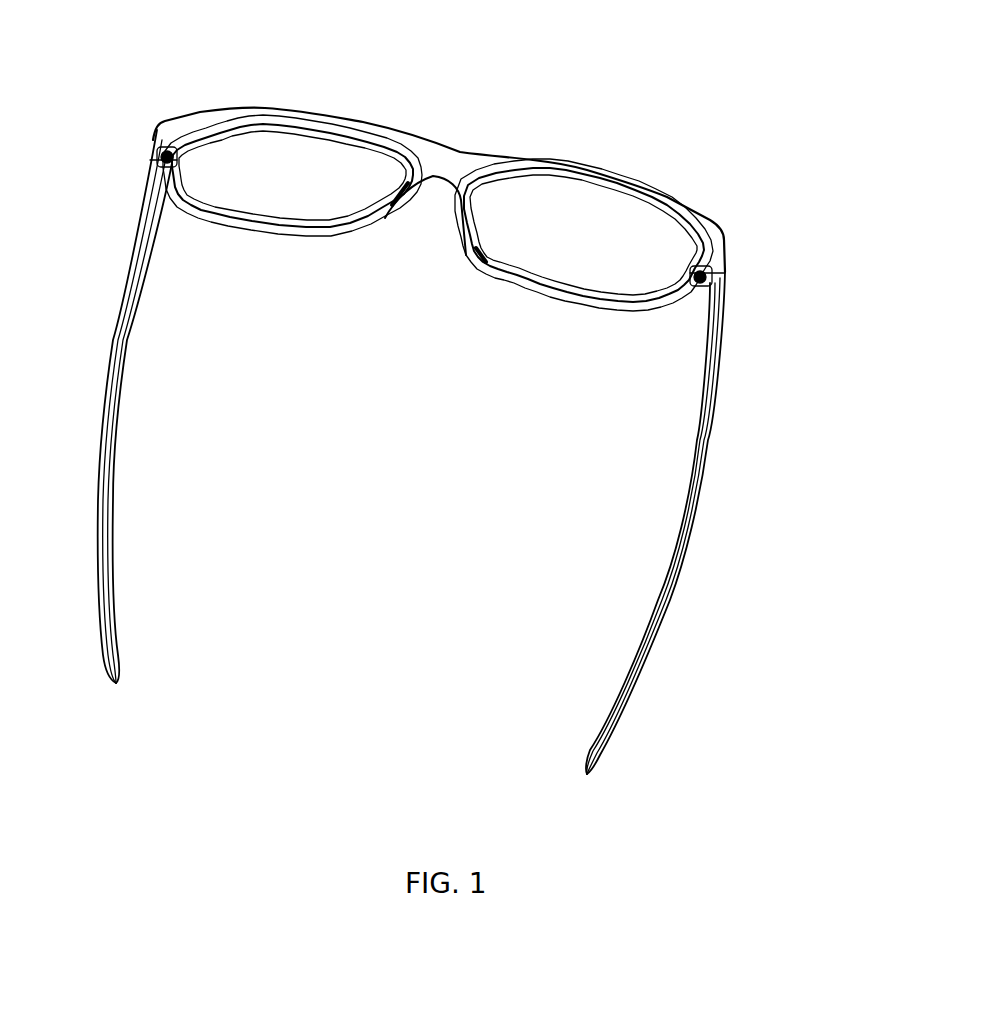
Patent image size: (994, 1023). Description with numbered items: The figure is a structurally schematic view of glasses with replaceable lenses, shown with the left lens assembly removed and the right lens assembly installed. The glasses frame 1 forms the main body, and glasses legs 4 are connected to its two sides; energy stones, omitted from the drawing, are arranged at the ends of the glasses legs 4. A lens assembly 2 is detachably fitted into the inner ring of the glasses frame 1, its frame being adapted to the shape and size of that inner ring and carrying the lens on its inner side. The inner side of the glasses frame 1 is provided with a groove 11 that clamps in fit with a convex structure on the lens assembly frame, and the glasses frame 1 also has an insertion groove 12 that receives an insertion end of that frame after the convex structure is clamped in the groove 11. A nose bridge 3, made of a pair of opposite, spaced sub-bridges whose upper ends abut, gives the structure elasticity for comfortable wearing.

The glasses frame 1 is at (455, 150).
The lens assembly 2 is at (620, 185).
The nose bridge 3 is at (475, 255).
The glasses legs 4 is at (703, 490).
The groove 11 is at (396, 200).
The insertion groove 12 is at (185, 145).